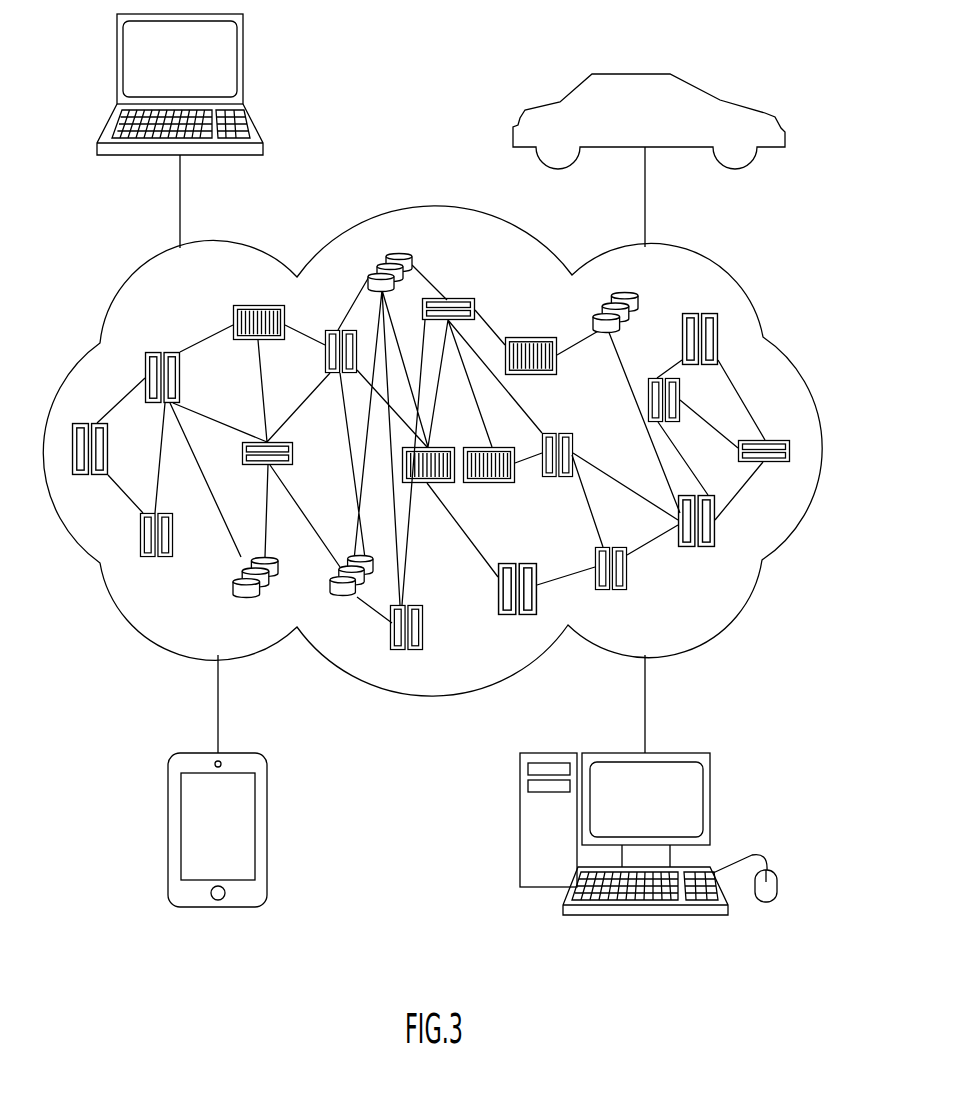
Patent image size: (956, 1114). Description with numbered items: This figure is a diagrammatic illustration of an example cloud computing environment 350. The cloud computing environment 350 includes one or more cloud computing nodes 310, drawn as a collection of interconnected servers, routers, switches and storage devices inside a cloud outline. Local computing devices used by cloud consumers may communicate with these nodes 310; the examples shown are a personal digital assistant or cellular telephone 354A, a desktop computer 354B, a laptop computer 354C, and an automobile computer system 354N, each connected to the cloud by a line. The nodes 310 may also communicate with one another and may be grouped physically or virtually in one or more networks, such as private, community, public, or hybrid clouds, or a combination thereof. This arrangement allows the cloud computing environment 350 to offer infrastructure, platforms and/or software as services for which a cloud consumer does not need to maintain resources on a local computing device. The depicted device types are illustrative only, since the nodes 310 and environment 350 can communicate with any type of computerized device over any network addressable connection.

The cloud computing nodes 310 is at (780, 490).
The cloud computing environment 350 is at (797, 370).
The personal digital assistant or cellular telephone 354A is at (267, 812).
The desktop computer 354B is at (712, 775).
The laptop computer 354C is at (247, 62).
The automobile computer system 354N is at (610, 73).